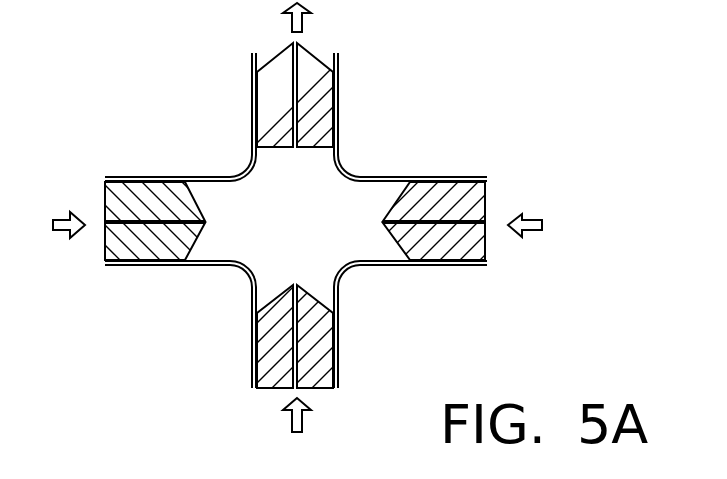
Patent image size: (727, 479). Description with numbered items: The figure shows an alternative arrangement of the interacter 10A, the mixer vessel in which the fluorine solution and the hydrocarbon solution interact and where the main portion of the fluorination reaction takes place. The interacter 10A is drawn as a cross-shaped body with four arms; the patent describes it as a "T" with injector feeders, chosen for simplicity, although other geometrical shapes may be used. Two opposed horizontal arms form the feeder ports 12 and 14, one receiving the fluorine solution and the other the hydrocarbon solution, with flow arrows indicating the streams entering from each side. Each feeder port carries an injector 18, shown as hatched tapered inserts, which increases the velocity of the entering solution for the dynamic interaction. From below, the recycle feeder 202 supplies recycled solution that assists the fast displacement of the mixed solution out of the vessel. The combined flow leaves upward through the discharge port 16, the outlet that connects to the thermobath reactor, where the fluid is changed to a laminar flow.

The interacter 10A is at (366, 169).
The injector 18 is at (458, 255).
The discharge port 16 is at (331, 18).
The feeder port 14 is at (321, 418).
The recycle feeder 202 is at (61, 206).
The feeder port 12 is at (550, 227).